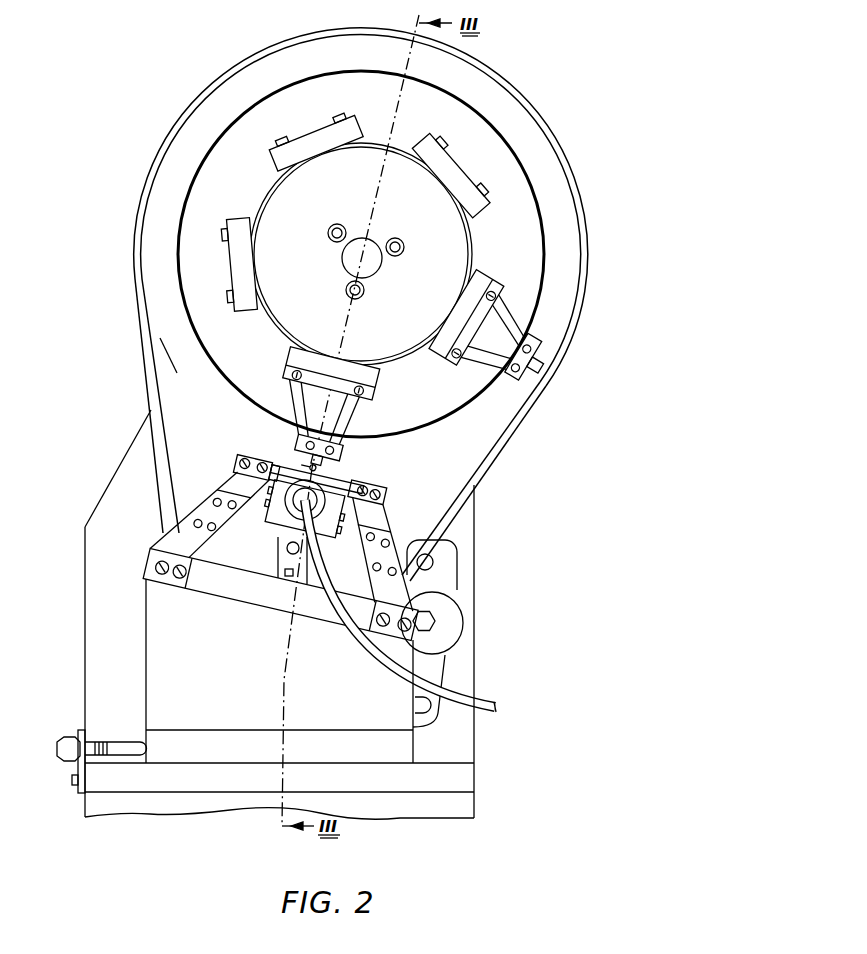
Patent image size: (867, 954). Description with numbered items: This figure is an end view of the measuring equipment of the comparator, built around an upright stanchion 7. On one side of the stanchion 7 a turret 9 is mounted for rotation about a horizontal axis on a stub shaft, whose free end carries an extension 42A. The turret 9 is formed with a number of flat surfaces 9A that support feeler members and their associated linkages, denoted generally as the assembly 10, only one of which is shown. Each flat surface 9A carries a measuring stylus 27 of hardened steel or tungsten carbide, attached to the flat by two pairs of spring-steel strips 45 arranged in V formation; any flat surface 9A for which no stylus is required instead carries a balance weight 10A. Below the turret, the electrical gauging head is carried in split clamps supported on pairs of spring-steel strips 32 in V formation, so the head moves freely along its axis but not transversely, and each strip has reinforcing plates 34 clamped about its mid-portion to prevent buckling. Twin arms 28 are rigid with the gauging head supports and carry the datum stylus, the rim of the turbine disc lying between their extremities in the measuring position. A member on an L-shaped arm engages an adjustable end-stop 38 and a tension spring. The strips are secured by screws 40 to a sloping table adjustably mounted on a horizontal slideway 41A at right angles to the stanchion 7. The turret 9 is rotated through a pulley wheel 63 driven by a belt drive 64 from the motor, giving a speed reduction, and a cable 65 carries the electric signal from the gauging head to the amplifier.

The upright stanchion 7 is at (462, 667).
The turret 9 is at (398, 362).
The flat surface 9A is at (326, 166).
The feeler member and associated linkage 10 is at (490, 326).
The balance weight 10A is at (447, 190).
The measuring stylus 27 is at (313, 468).
The twin arms 28 is at (267, 517).
The spring-steel strips 32 is at (232, 482).
The reinforcing plates 34 is at (207, 512).
The adjustable end-stop 38 is at (286, 558).
The screws 40 is at (150, 564).
The slideway 41A is at (462, 778).
The extension 42A is at (369, 240).
The spring-steel strips 45 is at (295, 393).
The pulley wheel 63 is at (540, 267).
The belt drive 64 is at (493, 450).
The cable 65 is at (373, 649).